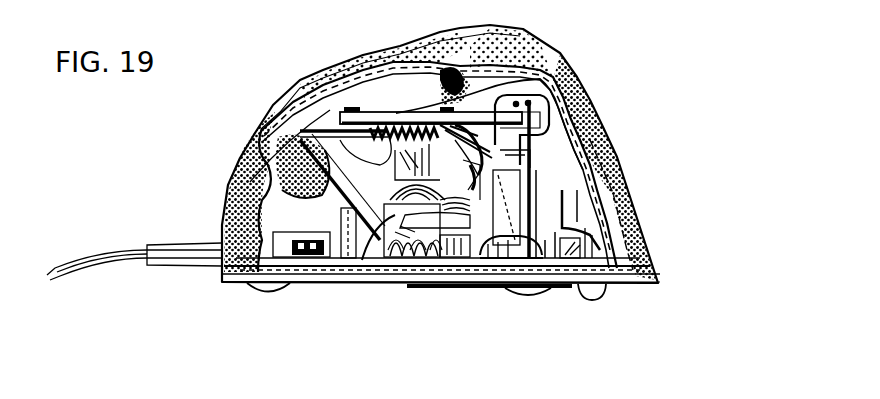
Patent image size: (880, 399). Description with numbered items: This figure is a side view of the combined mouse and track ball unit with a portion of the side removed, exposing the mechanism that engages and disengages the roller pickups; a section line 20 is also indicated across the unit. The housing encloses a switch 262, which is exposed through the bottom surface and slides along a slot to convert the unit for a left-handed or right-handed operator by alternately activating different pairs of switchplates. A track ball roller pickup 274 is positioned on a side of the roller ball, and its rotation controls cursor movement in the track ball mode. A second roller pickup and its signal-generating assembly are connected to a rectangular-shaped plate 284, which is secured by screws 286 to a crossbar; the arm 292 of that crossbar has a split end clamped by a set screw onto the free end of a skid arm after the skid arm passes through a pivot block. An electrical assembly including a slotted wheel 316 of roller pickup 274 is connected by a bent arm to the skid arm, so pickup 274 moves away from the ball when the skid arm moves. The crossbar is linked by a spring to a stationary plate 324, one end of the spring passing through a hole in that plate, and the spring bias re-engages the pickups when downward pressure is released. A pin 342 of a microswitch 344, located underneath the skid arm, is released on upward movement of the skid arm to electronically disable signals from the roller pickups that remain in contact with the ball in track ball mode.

The section line 20- 20 is at (232, 173).
The switch 262 is at (318, 252).
The track ball roller pickup 274 is at (611, 144).
The rectangular-shaped plate 284 is at (330, 93).
The screws 286 is at (295, 112).
The arm of crossbar 292 is at (356, 248).
The slotted wheel 316 is at (470, 130).
The stationary plate 324 is at (404, 113).
The pin 342 is at (522, 256).
The microswitch 344 is at (530, 256).